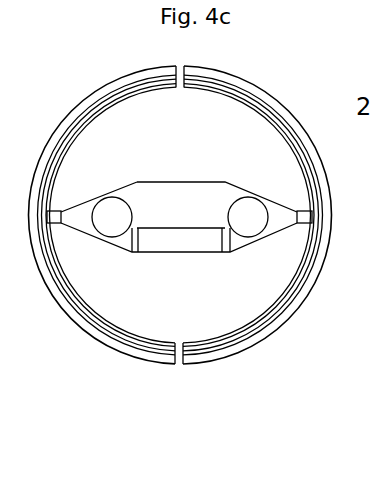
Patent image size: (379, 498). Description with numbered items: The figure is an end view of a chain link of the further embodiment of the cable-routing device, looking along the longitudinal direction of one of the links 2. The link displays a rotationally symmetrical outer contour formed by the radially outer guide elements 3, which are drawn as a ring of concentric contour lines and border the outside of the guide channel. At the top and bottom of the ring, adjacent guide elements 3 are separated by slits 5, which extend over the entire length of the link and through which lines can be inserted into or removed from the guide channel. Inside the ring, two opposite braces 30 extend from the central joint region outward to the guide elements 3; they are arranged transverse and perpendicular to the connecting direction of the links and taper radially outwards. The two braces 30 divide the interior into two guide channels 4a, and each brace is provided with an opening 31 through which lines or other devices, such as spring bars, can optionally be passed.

The links 2 is at (272, 344).
The guide elements 3 is at (108, 90).
The guide channels 4a is at (262, 132).
The slits 5 is at (182, 356).
The brace 30 is at (82, 219).
The openings 31 is at (117, 222).